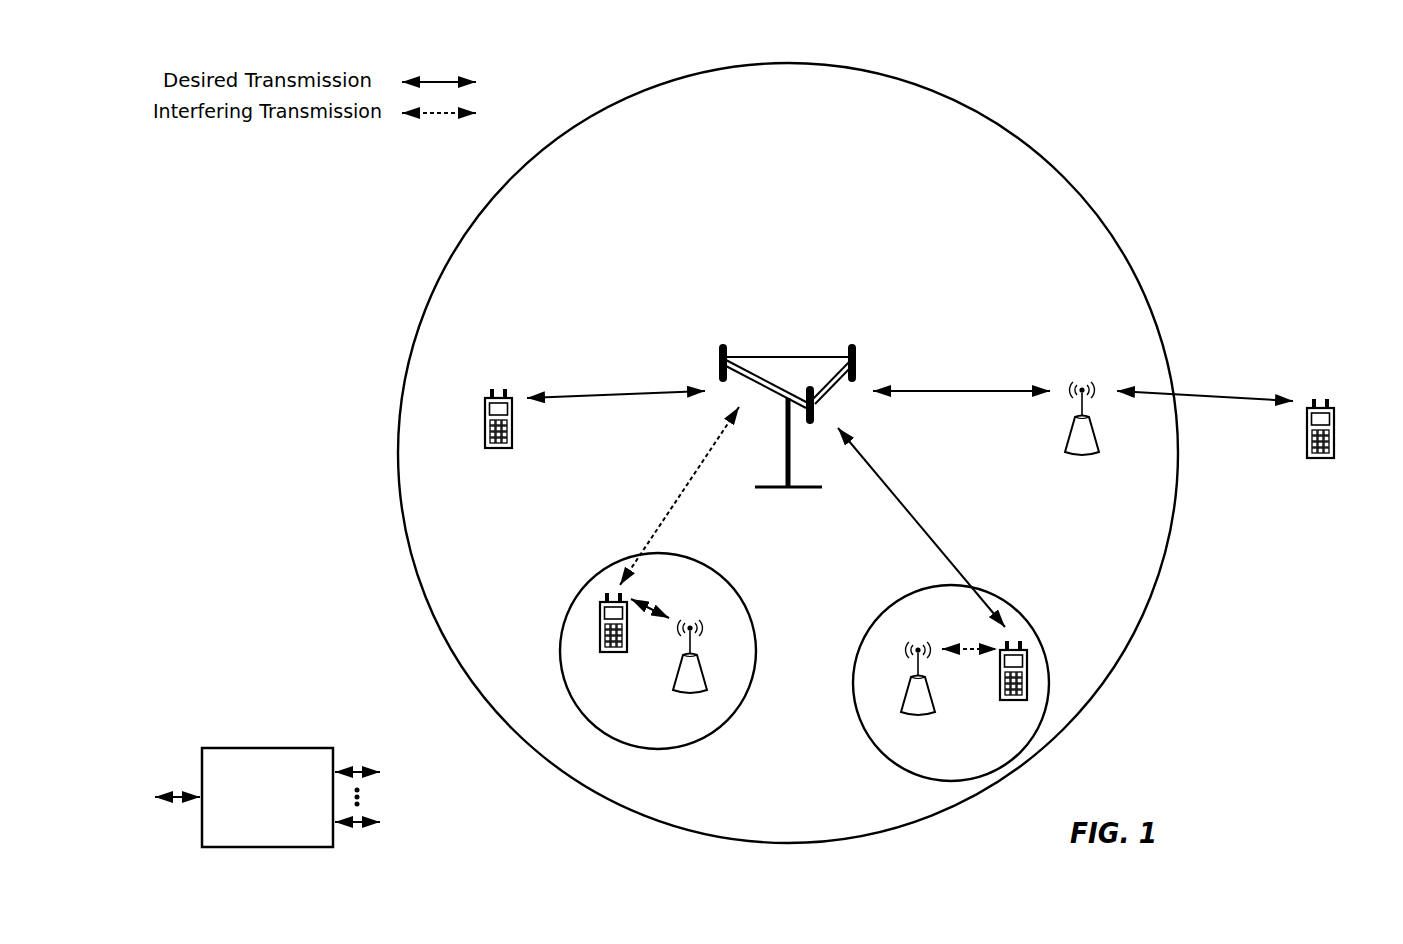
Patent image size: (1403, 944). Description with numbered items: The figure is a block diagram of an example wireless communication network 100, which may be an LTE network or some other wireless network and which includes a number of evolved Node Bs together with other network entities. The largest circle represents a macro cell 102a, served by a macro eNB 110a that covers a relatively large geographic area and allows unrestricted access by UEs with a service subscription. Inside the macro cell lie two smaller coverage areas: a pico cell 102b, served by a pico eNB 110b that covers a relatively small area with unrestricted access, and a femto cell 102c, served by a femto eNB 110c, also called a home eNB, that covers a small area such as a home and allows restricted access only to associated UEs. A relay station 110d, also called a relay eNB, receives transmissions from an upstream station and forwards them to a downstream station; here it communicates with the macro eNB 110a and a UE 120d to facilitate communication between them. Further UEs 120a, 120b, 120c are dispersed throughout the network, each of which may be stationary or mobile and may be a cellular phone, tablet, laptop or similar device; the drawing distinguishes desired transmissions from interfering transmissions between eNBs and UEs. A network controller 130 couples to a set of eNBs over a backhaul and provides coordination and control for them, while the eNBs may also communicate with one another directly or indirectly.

The wireless communication network 100 is at (1288, 113).
The macro cell 102a is at (1046, 162).
The pico cell 102b is at (737, 586).
The femto cell 102c is at (878, 616).
The macro eNB 110a is at (782, 357).
The pico eNB 110b is at (717, 668).
The femto eNB 110c is at (906, 697).
The relay station 110d is at (1084, 384).
The UE 120a is at (484, 405).
The UE 120b is at (600, 645).
The UE 120c is at (999, 693).
The UE 120d is at (1334, 415).
The network controller 130 is at (263, 748).